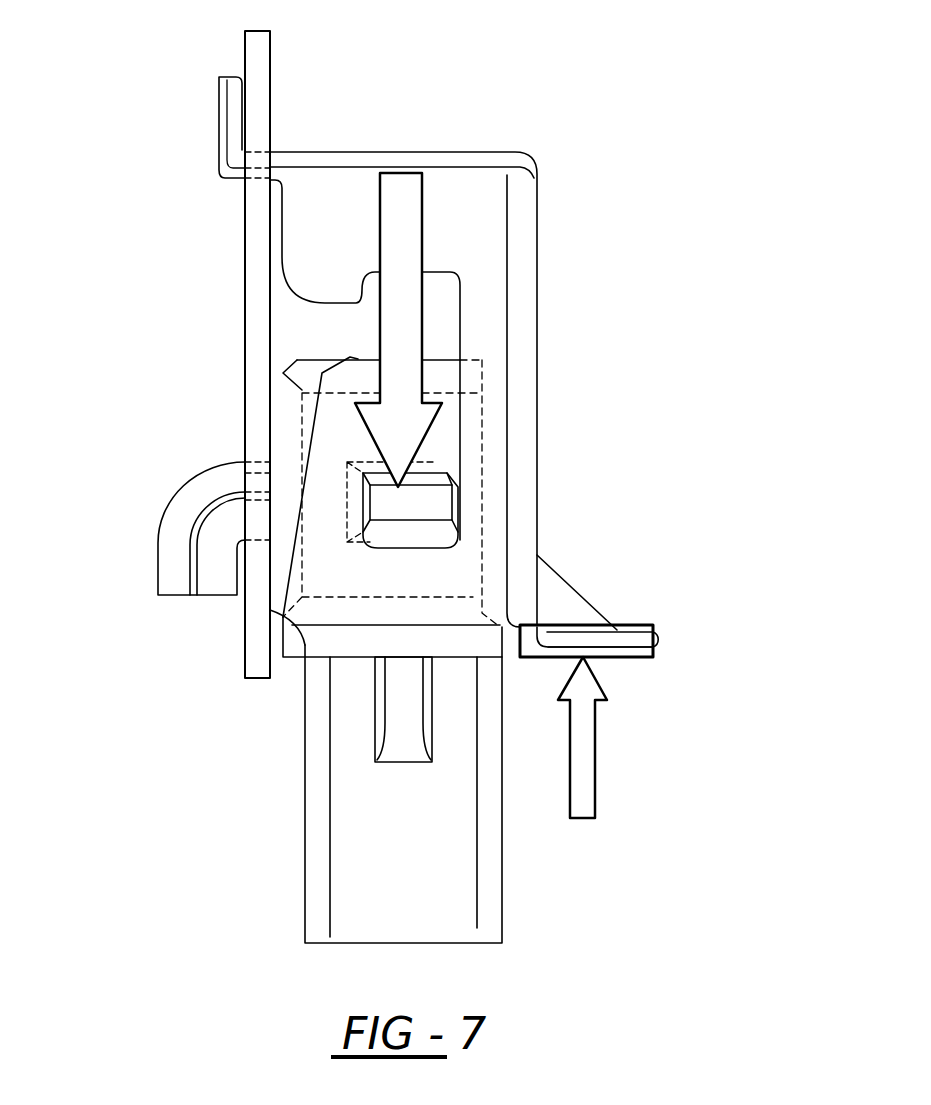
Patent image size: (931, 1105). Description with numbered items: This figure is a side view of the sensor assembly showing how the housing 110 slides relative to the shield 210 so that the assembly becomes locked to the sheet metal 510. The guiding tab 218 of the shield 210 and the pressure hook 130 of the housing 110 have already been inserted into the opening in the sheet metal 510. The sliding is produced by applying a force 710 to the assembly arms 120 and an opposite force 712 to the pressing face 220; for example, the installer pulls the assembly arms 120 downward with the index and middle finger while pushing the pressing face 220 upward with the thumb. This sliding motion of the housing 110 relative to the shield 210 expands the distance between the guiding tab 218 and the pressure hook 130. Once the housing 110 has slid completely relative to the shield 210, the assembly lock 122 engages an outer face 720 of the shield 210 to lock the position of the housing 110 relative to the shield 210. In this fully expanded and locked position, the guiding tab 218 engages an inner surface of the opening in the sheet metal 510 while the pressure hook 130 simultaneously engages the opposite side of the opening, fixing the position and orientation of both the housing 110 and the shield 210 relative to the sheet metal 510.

The sheet metal 510 is at (260, 65).
The guiding tab 218 is at (233, 102).
The shield 210 is at (313, 243).
The pressing face 220 is at (625, 645).
The housing 110 is at (283, 407).
The assembly arms 120 is at (418, 503).
The pressure hook 130 is at (193, 503).
The assembly lock 122 is at (408, 708).
The outer face 720 is at (355, 657).
The force 710 is at (422, 235).
The opposite force 712 is at (595, 772).